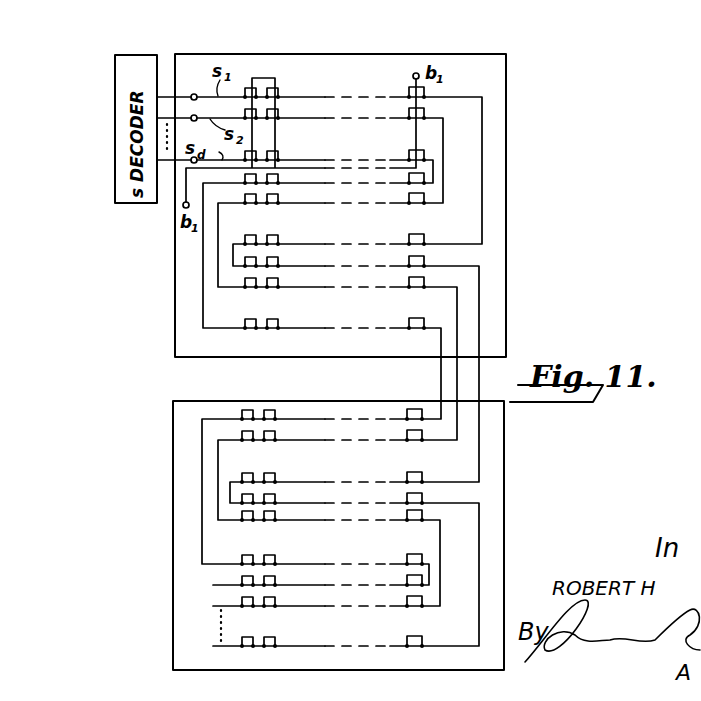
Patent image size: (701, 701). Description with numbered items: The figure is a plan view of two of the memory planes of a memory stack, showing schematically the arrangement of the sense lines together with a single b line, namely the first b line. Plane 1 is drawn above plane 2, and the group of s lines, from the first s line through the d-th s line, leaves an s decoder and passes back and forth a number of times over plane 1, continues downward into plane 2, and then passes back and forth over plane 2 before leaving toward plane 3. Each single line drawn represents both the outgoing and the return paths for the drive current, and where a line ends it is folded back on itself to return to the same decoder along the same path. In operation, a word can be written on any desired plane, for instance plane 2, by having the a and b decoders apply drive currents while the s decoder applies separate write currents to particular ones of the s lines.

The memory plane 1 is at (498, 167).
The memory plane 2 is at (278, 535).
The memory plane 3 is at (210, 647).